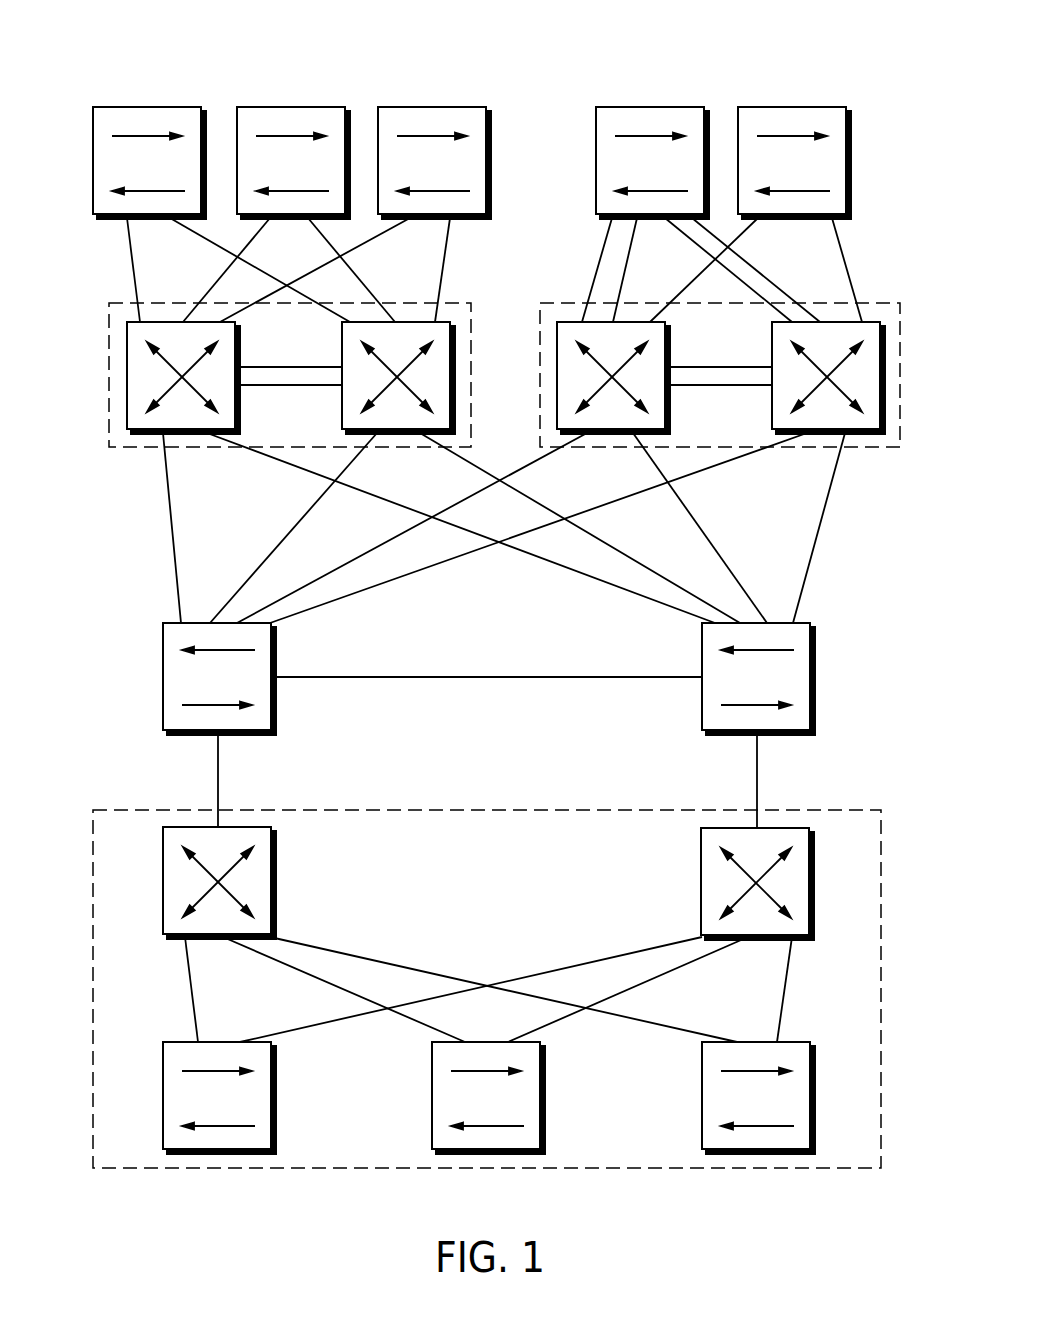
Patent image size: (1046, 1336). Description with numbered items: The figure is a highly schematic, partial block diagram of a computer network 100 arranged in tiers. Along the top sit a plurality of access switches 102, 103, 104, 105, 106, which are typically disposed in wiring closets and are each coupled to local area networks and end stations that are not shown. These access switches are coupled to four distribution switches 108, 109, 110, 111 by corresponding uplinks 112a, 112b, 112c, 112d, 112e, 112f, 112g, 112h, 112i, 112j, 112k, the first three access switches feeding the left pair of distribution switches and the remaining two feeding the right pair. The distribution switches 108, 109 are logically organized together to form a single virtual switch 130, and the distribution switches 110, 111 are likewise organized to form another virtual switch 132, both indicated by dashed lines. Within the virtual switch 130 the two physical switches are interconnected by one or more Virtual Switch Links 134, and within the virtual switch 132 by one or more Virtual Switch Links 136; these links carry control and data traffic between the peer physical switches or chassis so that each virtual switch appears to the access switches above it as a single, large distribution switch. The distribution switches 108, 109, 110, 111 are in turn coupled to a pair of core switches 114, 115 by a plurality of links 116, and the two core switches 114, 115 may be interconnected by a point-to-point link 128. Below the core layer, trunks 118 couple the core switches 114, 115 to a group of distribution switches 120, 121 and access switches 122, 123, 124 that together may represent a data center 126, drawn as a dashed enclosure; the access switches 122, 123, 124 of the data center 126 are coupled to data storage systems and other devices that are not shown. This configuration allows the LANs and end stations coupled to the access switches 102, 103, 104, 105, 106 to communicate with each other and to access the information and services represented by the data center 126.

The computer network 100 is at (546, 32).
The access switch 102 is at (146, 107).
The access switch 103 is at (289, 107).
The access switch 104 is at (432, 107).
The access switch 105 is at (647, 107).
The access switch 106 is at (792, 107).
The distribution switch 108 is at (133, 320).
The distribution switch 109 is at (441, 320).
The distribution switch 110 is at (557, 376).
The distribution switch 111 is at (877, 320).
The uplink 112a is at (130, 244).
The uplink 112b is at (215, 244).
The uplink 112c is at (250, 242).
The uplink 112d is at (366, 243).
The uplink 112e is at (450, 242).
The uplink 112f is at (602, 247).
The uplink 112g is at (622, 279).
The uplink 112h is at (679, 234).
The uplink 112i is at (775, 269).
The uplink 112j is at (750, 232).
The uplink 112k is at (846, 242).
The core switch 114 is at (161, 644).
The core switch 115 is at (697, 644).
The link 116 is at (166, 517).
The trunk 118 is at (215, 754).
The distribution switch 120 is at (162, 842).
The distribution switch 121 is at (701, 842).
The access switch 122 is at (162, 1096).
The access switch 123 is at (431, 1096).
The access switch 124 is at (701, 1096).
The data center 126 is at (512, 807).
The point-to-point link 128 is at (432, 677).
The virtual switch 130 is at (127, 452).
The virtual switch 132 is at (607, 452).
The Virtual Switch Link 134 is at (277, 356).
The Virtual Switch Link 136 is at (707, 356).